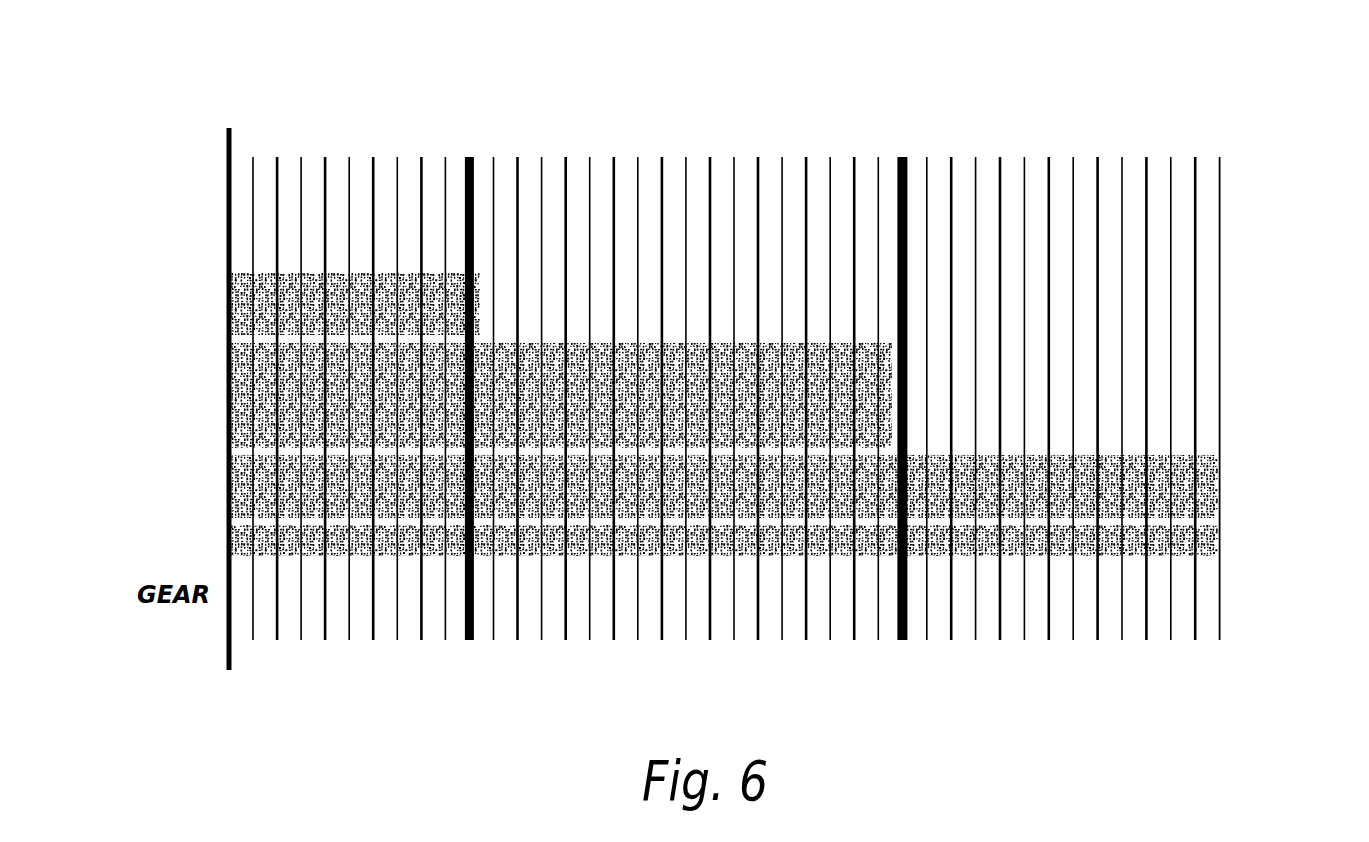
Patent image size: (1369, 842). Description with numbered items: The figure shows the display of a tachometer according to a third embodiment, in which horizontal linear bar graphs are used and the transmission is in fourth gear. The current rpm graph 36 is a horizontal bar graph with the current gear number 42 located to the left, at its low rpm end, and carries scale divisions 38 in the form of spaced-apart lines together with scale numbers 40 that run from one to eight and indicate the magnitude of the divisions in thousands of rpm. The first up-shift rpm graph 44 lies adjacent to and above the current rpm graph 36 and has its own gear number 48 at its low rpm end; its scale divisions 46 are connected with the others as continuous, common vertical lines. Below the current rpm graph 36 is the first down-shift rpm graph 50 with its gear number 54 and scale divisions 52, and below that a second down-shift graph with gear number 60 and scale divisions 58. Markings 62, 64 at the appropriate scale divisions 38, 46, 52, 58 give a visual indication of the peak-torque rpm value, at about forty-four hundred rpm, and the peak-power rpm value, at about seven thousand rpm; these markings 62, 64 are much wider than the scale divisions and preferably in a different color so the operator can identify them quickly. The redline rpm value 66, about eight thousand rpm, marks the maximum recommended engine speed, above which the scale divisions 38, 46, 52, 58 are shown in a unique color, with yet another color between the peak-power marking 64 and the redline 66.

The current rpm graph 36 is at (817, 332).
The scale divisions 38 is at (724, 445).
The scale numbers 40 is at (682, 107).
The current gear number 42 is at (182, 390).
The first up-shift rpm graph 44 is at (266, 266).
The scale divisions 46 is at (724, 445).
The gear number 48 is at (193, 292).
The first down-shift rpm graph 50 is at (1230, 482).
The scale divisions 52 is at (724, 445).
The gear number 54 is at (1230, 539).
The scale divisions 58 is at (1024, 630).
The gear number 60 is at (188, 547).
The peak-torque marking 62 is at (473, 620).
The peak-power marking 64 is at (907, 625).
The redline rpm value 66 is at (1218, 622).